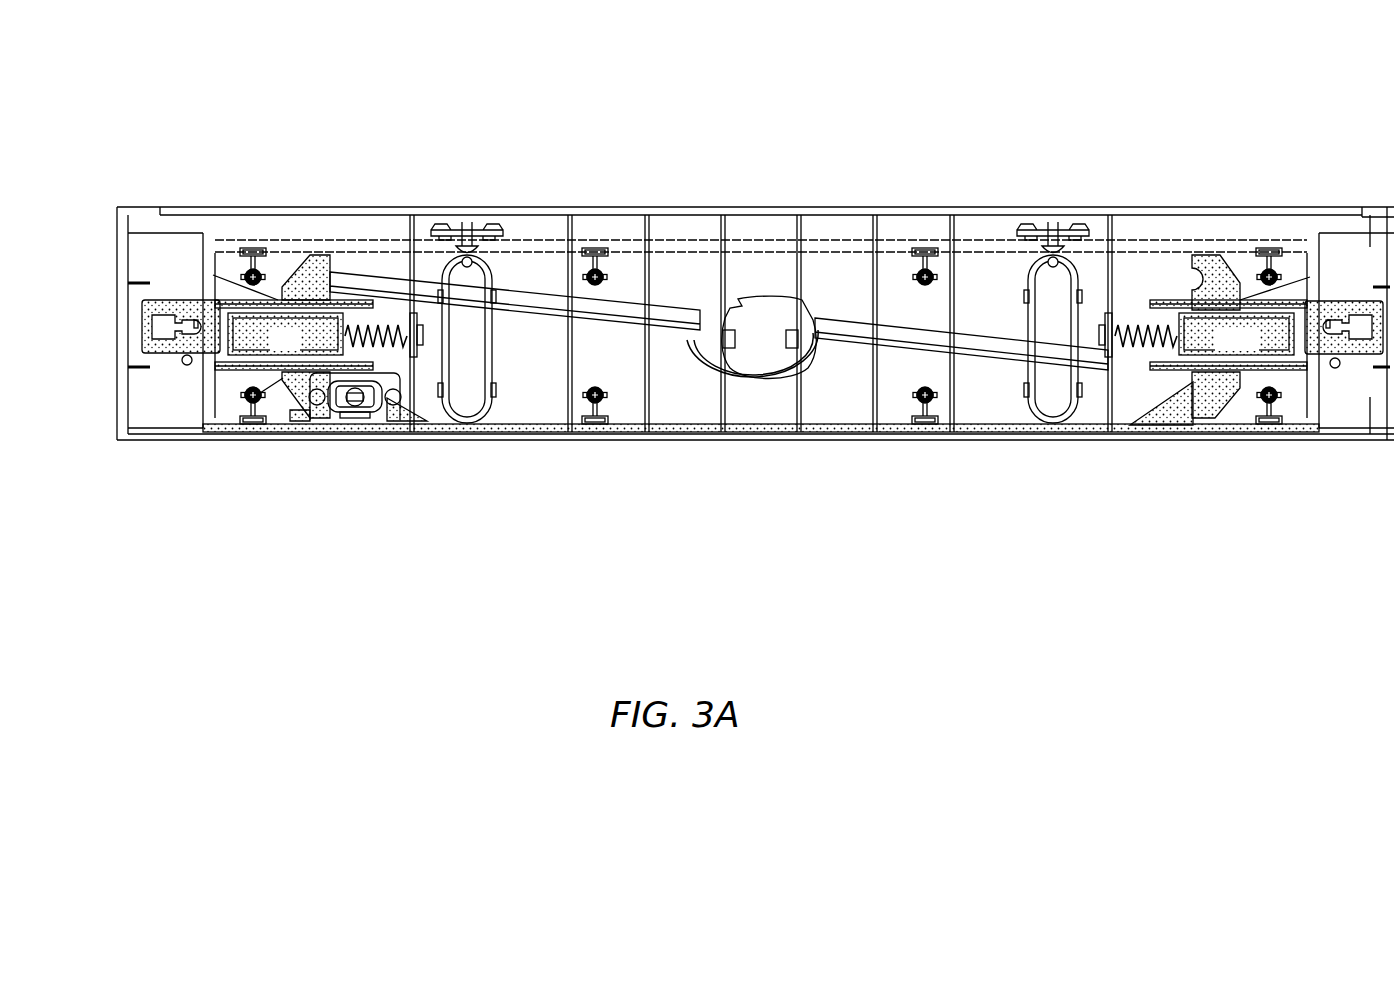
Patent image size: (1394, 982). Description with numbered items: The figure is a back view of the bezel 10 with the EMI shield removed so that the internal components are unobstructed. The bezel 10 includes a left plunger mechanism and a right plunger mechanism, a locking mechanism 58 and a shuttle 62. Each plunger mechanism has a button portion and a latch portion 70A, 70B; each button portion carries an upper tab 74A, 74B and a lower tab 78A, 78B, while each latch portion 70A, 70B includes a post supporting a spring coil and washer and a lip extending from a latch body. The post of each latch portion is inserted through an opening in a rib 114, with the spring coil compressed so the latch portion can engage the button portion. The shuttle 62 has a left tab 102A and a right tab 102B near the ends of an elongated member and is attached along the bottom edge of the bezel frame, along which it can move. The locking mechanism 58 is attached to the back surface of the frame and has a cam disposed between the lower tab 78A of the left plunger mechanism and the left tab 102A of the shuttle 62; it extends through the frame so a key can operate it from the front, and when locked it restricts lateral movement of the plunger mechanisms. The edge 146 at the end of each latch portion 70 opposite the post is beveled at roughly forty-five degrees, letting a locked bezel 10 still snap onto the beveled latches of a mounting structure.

The bezel 10 is at (826, 122).
The rib 114 is at (410, 253).
The upper tab 74A is at (307, 280).
The upper tab 74B is at (1220, 287).
The latch portion 70A is at (202, 310).
The latch portion 70B is at (1221, 350).
The latch portion 70 is at (274, 350).
The edge 146 is at (140, 338).
The lower tab 78A is at (280, 386).
The lower tab 78B is at (1210, 400).
The locking mechanism 58 is at (343, 423).
The left tab 102A is at (393, 412).
The right tab 102B is at (1158, 424).
The shuttle 62 is at (506, 429).